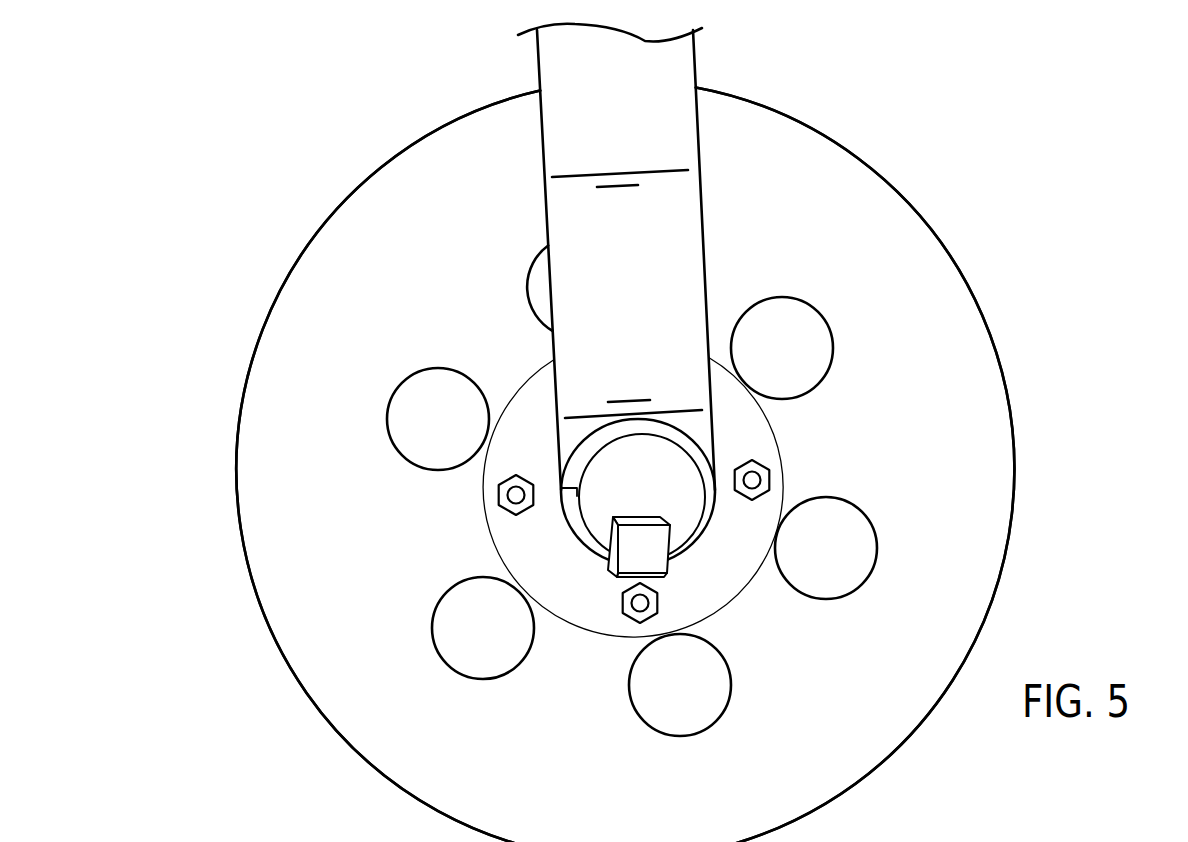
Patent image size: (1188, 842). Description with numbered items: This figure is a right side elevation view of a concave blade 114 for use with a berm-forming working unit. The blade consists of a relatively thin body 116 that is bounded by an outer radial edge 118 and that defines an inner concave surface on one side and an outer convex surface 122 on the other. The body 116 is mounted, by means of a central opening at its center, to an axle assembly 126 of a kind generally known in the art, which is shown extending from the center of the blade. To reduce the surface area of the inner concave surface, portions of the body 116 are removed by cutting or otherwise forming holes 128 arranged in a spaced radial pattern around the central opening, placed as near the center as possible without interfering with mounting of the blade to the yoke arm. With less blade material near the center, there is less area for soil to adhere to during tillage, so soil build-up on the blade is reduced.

The concave blade 114 is at (300, 755).
The body 116 is at (868, 228).
The outer radial edge 118 is at (997, 350).
The outer convex surface 122 is at (872, 752).
The axle assembly 126 is at (733, 447).
The holes 128 is at (417, 448).